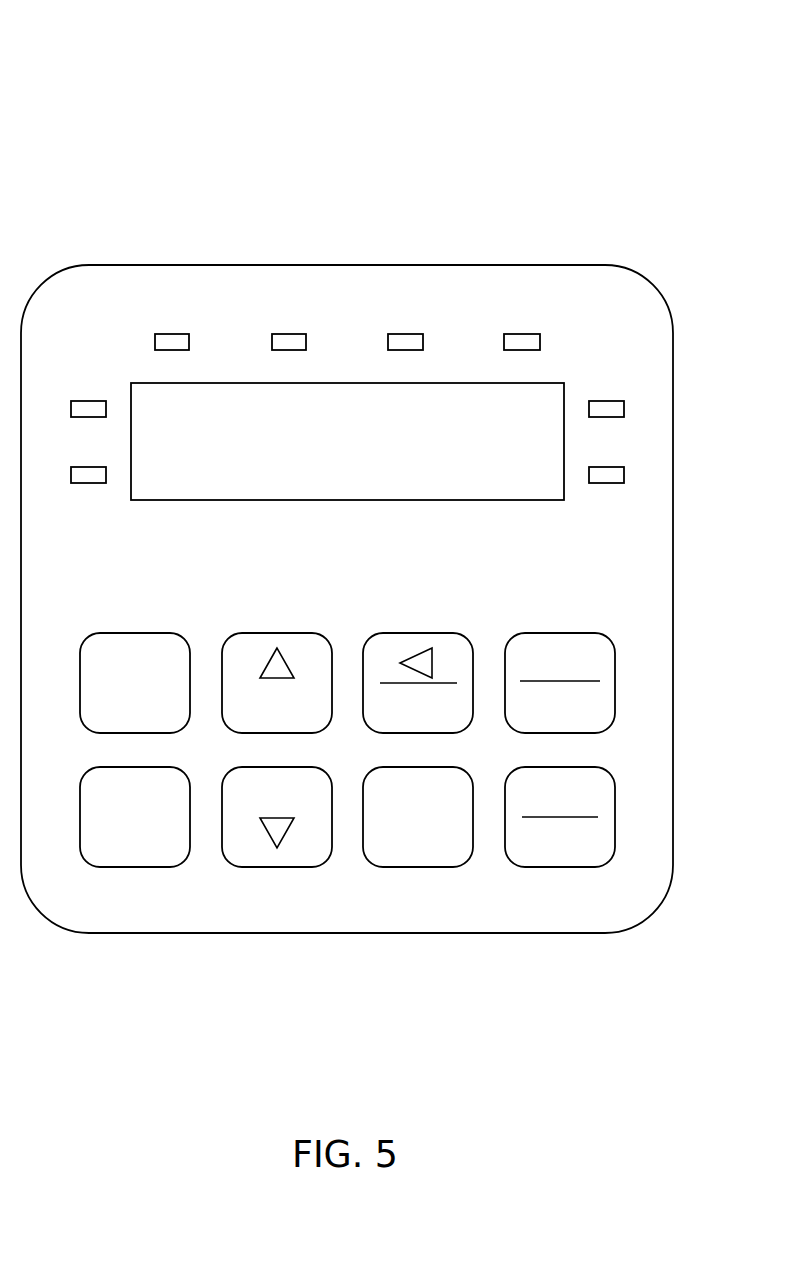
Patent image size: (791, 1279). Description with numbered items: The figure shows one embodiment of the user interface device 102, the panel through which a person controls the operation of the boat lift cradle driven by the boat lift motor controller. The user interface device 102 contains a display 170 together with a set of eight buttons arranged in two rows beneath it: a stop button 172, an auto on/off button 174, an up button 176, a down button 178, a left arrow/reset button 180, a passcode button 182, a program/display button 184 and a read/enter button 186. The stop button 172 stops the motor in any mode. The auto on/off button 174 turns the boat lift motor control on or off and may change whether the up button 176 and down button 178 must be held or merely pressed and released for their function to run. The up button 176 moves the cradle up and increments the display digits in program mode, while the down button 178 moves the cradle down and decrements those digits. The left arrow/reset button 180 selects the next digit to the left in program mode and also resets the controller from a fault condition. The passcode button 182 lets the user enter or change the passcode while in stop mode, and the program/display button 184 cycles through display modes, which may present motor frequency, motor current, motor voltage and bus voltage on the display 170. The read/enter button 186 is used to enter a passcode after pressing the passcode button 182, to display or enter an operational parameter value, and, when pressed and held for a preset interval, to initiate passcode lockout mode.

The user interface device 102 is at (430, 78).
The display 170 is at (545, 497).
The stop button 172 is at (115, 633).
The auto on/off button 174 is at (115, 867).
The up button 176 is at (257, 633).
The down button 178 is at (257, 867).
The left arrow/reset button 180 is at (399, 633).
The passcode button 182 is at (399, 867).
The program/display button 184 is at (549, 633).
The read/enter button 186 is at (549, 867).